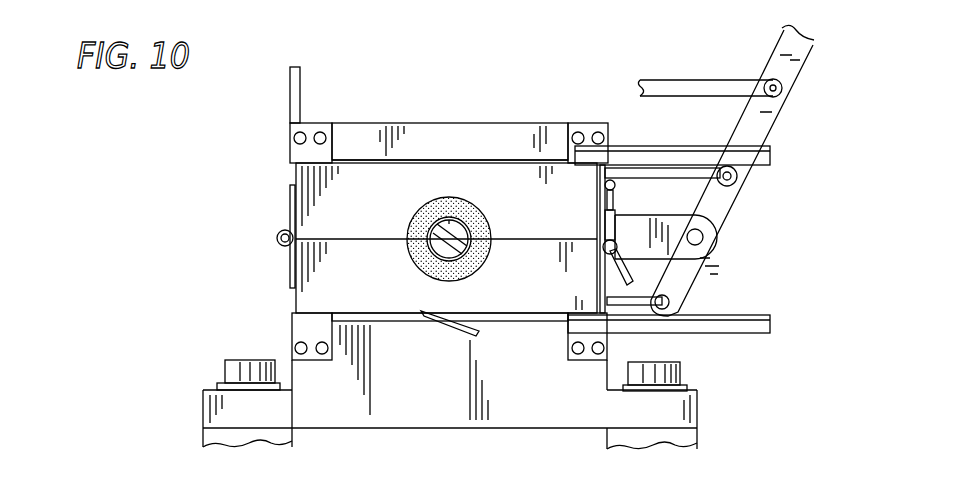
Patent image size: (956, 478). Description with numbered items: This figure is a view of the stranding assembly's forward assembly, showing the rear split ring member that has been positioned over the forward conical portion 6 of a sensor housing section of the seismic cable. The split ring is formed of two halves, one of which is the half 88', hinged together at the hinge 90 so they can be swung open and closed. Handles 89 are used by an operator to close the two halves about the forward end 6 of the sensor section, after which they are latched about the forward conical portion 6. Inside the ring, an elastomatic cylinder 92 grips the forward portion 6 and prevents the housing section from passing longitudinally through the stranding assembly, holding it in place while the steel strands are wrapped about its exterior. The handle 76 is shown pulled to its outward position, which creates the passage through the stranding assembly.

The forward conical portion 6 is at (448, 228).
The handle 76 is at (765, 117).
The half of rear split ring member 88' is at (450, 124).
The handles 89 is at (658, 152).
The hinge 90 is at (278, 236).
The elastomatic cylinder 92 is at (478, 215).